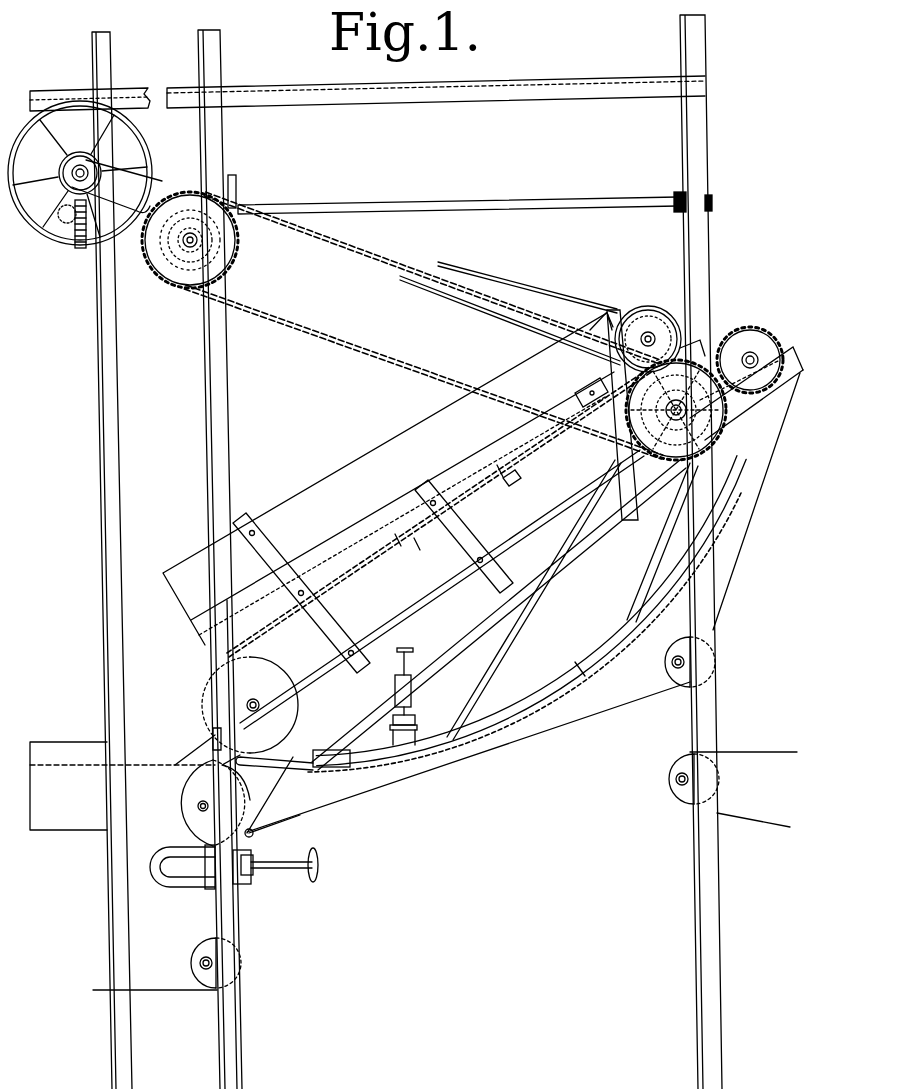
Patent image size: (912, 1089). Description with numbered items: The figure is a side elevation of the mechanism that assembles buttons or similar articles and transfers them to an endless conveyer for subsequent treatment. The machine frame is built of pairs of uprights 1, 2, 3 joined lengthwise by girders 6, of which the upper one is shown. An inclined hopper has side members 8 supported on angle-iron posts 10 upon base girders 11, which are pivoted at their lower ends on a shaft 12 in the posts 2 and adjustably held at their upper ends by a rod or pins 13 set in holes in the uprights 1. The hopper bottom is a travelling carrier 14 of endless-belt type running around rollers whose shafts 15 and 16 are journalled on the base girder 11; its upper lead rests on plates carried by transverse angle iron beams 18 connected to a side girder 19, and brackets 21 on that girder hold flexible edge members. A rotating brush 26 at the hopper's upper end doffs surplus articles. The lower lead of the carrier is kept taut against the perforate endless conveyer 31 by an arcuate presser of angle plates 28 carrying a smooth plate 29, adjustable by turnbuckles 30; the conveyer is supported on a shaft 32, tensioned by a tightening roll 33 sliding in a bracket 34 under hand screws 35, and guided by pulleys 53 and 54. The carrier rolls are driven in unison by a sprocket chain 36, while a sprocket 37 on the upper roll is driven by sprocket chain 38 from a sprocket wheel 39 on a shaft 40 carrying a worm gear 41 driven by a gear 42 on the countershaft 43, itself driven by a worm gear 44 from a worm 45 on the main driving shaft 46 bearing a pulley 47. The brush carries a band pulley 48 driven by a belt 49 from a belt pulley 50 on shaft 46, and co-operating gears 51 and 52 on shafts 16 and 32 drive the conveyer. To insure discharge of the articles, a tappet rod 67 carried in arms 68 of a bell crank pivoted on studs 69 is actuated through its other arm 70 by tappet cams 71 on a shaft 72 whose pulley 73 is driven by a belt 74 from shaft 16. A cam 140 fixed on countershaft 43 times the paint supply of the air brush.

The upright 1 is at (716, 1002).
The upright 2 is at (237, 1043).
The upright 3 is at (128, 1055).
The girder 6 is at (503, 91).
The side member 8 is at (342, 468).
The post 10 is at (273, 560).
The girder 11 is at (377, 642).
The shaft 12 is at (213, 737).
The rod or pins 13 is at (727, 405).
The travelling carrier 14 is at (432, 582).
The shaft 15 is at (256, 698).
The shaft 16 is at (684, 401).
The transverse angle iron beam 18 is at (516, 476).
The side girder 19 is at (398, 546).
The bracket 21 is at (428, 500).
The rotating brush 26 is at (652, 298).
The angle plate 28 is at (618, 636).
The smooth plate 29 is at (312, 757).
The turnbuckle 30 is at (413, 691).
The endless conveyer 31 is at (740, 546).
The shaft 32 is at (751, 355).
The tightening roll 33 is at (203, 872).
The bracket 34 is at (177, 885).
The hand screw 35 is at (287, 874).
The sprocket chain 36 is at (508, 490).
The sprocket 37 is at (696, 346).
The sprocket chain 38 is at (402, 272).
The sprocket wheel 39 is at (234, 254).
The shaft 40 is at (189, 246).
The worm gear 41 is at (170, 258).
The gear 42 is at (133, 208).
The countershaft 43 is at (423, 205).
The worm gear 44 is at (82, 249).
The worm 45 is at (63, 189).
The main driving shaft 46 is at (84, 169).
The pulley 47 is at (27, 118).
The band pulley 48 is at (632, 299).
The belt 49 is at (153, 182).
The belt pulley 50 is at (58, 165).
The gear 51 is at (720, 431).
The gear 52 is at (773, 338).
The guide pulley 53 is at (674, 681).
The guide pulley 54 is at (207, 976).
The tappet rod 67 is at (300, 760).
The arm 68 is at (275, 790).
The shaft or studs 69 is at (238, 778).
The arm 70 is at (256, 826).
The tappet cam 71 is at (198, 812).
The shaft 72 is at (200, 801).
The pulley 73 is at (172, 772).
The belt 74 is at (373, 710).
The cam 140 is at (237, 185).